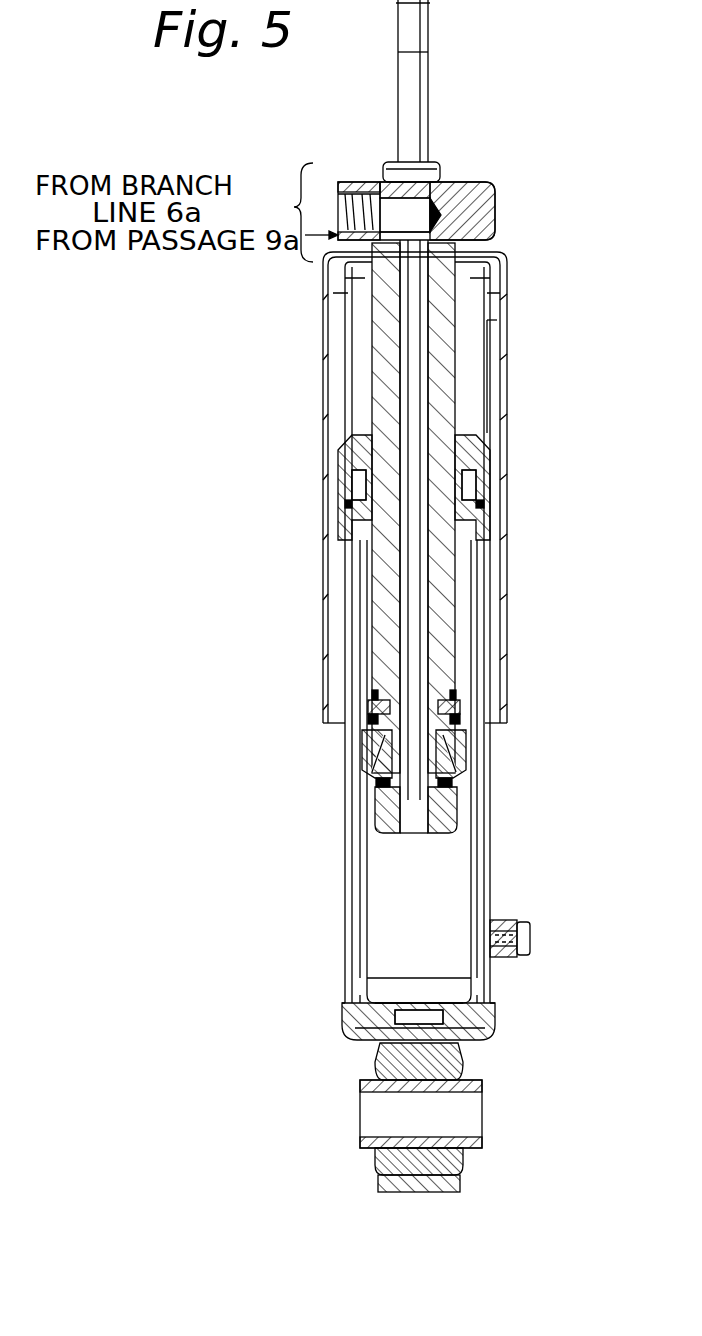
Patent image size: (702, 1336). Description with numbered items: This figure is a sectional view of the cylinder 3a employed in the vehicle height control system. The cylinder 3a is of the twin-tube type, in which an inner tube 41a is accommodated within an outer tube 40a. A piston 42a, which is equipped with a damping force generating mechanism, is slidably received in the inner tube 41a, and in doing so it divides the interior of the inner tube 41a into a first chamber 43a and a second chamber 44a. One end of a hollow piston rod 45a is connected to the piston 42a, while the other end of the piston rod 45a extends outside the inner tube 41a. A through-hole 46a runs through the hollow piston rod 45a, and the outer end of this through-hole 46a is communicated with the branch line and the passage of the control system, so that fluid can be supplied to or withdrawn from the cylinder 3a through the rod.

The cylinder 3a is at (530, 140).
The outer tube 40a is at (490, 762).
The inner tube 41a is at (490, 827).
The piston 42a is at (375, 735).
The first chamber 43a is at (465, 583).
The second chamber 44a is at (430, 888).
The hollow piston rod 45a is at (380, 378).
The through-hole 46a is at (412, 615).